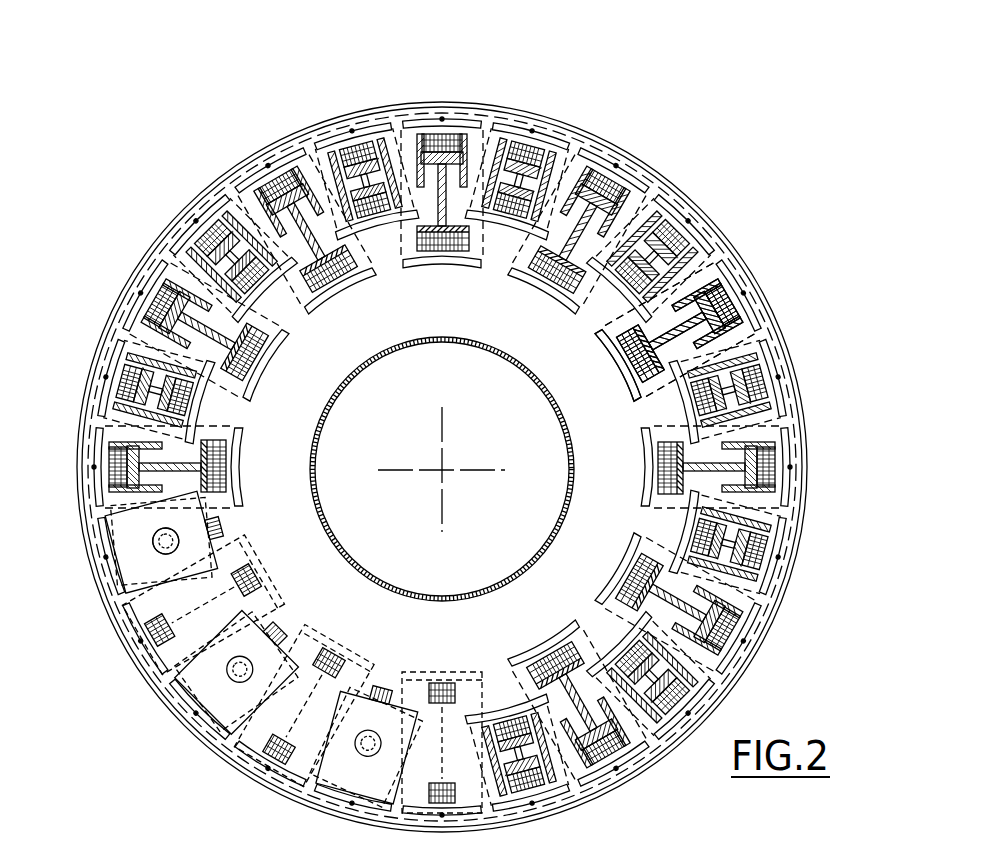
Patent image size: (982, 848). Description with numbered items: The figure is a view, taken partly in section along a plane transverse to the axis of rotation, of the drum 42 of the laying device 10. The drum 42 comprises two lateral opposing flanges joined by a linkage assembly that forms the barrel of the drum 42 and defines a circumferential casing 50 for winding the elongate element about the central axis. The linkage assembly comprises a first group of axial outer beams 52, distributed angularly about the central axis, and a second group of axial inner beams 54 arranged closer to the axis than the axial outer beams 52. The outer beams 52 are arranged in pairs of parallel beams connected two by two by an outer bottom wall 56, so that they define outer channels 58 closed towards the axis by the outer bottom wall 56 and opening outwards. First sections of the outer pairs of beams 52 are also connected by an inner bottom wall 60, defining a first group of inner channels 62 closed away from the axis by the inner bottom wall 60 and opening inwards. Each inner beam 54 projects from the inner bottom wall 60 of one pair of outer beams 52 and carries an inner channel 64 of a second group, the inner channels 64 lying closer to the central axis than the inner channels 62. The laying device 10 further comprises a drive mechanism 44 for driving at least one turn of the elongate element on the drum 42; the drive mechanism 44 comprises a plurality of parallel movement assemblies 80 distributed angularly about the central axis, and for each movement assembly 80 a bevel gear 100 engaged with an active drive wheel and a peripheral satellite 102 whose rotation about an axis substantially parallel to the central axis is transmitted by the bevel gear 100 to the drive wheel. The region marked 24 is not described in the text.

The laying device 10 is at (457, 445).
The rotor / phantom module region 24 is at (449, 663).
The drum 42 is at (82, 296).
The drive mechanism 44 is at (537, 103).
The circumferential casing 50 is at (293, 128).
The axial outer beams 52 is at (442, 430).
The axial inner beams 54 is at (523, 240).
The outer bottom wall 56 is at (413, 131).
The outer channels 58 is at (373, 122).
The inner bottom wall 60 is at (370, 205).
The inner channels of first group 62 is at (620, 357).
The inner channels of second group 64 is at (557, 303).
The movement assemblies 80 is at (333, 125).
The bevel gear 100 is at (130, 568).
The peripheral satellite 102 is at (125, 585).